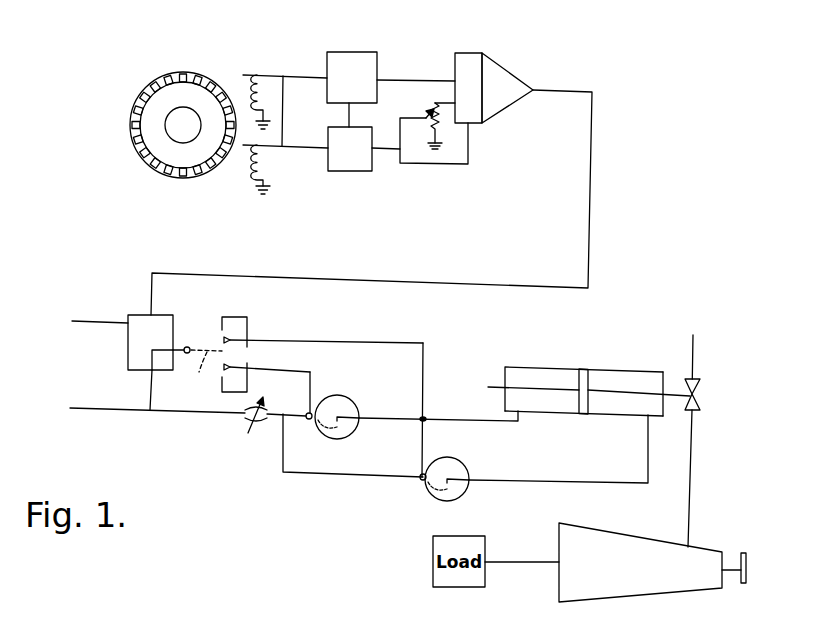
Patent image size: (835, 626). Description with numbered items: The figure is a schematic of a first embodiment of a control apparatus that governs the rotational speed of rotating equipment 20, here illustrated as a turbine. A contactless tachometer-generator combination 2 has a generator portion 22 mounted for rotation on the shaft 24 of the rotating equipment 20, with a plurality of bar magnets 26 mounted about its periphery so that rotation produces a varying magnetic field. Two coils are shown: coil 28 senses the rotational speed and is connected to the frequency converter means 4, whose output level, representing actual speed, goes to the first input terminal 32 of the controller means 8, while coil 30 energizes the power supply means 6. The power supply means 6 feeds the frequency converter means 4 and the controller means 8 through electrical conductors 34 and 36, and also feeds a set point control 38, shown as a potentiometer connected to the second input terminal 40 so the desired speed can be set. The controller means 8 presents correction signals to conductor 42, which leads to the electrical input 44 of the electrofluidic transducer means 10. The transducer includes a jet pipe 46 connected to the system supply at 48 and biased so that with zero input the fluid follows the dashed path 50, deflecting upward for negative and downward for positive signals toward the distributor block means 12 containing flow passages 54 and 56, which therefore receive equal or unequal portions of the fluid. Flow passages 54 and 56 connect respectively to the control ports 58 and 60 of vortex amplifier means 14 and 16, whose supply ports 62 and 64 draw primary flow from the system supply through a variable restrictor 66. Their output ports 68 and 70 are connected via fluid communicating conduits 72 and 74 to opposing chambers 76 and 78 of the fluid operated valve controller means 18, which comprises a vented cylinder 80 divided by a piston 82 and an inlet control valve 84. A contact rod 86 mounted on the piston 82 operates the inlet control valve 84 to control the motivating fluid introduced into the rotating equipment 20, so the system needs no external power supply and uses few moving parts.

The tachometer-generator combination 2 is at (118, 126).
The frequency converter means 4 is at (357, 52).
The power supply means 6 is at (347, 171).
The controller means 8 is at (506, 70).
The electrofluidic transducer means 10 is at (120, 348).
The distributor block means 12 is at (238, 317).
The vortex amplifier means 14 is at (465, 492).
The vortex amplifier means 16 is at (337, 439).
The fluid operated valve controller means 18 is at (555, 367).
The rotating equipment 20 is at (665, 595).
The generator portion 22 is at (170, 137).
The shaft 24 is at (731, 573).
The bar magnets 26 is at (198, 71).
The coil 28 is at (283, 75).
The coil 30 is at (292, 148).
The first input terminal 32 is at (401, 80).
The electrical conductor 34 is at (349, 114).
The electrical conductor 36 is at (468, 147).
The set point control 38 is at (432, 112).
The second input terminal 40 is at (447, 101).
The conductor 42 is at (591, 193).
The electrical input 44 is at (140, 315).
The jet pipe 46 is at (189, 347).
The system supply 48 is at (150, 395).
The dashed path 50 is at (196, 376).
The flow passage 54 is at (232, 339).
The flow passage 56 is at (232, 368).
The control port 58 is at (423, 443).
The control port 60 is at (312, 387).
The supply port 62 is at (421, 480).
The supply port 64 is at (309, 421).
The variable restrictor 66 is at (262, 430).
The output port 68 is at (458, 473).
The output port 70 is at (345, 410).
The fluid communicating conduit 72 is at (583, 483).
The fluid communicating conduit 74 is at (480, 419).
The chamber 76 is at (639, 385).
The chamber 78 is at (533, 385).
The cylinder 80 is at (612, 416).
The piston 82 is at (591, 383).
The inlet control valve 84 is at (701, 396).
The contact rod 86 is at (650, 395).